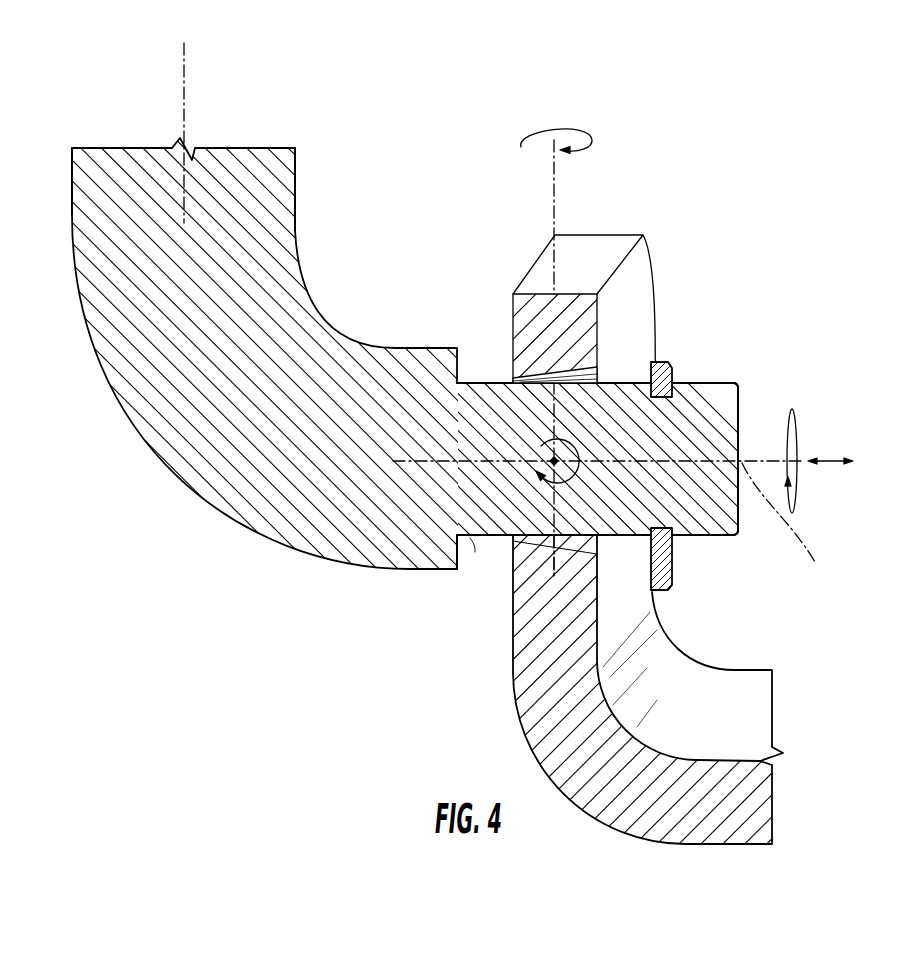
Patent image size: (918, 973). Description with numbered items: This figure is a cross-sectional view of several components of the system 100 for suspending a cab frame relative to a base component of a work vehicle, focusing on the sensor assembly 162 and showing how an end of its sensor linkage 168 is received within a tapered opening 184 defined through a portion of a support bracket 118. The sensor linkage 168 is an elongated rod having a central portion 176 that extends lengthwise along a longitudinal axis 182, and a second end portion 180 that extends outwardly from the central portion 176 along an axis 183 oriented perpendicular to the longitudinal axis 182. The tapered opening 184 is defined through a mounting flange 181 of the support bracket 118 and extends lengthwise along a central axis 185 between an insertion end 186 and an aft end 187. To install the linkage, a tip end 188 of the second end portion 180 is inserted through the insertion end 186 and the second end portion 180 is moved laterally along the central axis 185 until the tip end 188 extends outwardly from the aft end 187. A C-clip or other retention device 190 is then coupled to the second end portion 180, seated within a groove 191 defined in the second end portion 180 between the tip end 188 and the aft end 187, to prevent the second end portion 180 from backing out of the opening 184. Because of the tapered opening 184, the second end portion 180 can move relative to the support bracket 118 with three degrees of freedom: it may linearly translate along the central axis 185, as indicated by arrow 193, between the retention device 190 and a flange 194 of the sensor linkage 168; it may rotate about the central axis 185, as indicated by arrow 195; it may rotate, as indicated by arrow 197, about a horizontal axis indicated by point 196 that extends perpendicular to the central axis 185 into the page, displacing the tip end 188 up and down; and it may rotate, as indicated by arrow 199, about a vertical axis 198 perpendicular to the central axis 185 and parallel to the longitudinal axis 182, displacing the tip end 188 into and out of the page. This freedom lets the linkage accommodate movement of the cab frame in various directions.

The system 100 is at (680, 103).
The support bracket 118 is at (776, 698).
The sensor assembly 162 is at (168, 547).
The sensor linkage 168 is at (72, 215).
The central portion 176 is at (270, 197).
The second end portion 180 is at (698, 390).
The mounting flange 181 is at (523, 637).
The longitudinal axis 182 is at (183, 90).
The axis 183 is at (802, 528).
The tapered opening 184 is at (567, 363).
The central axis 185 is at (802, 528).
The insertion end 186 is at (512, 378).
The aft end 187 is at (602, 383).
The tip end 188 is at (740, 408).
The retention device 190 is at (674, 570).
The groove 191 is at (706, 538).
The arrow 193 is at (825, 461).
The flange 194 is at (474, 548).
The arrow 195 is at (793, 412).
The point 196 is at (588, 442).
The arrow 197 is at (578, 482).
The vertical axis 198 is at (555, 198).
The arrow 199 is at (556, 130).